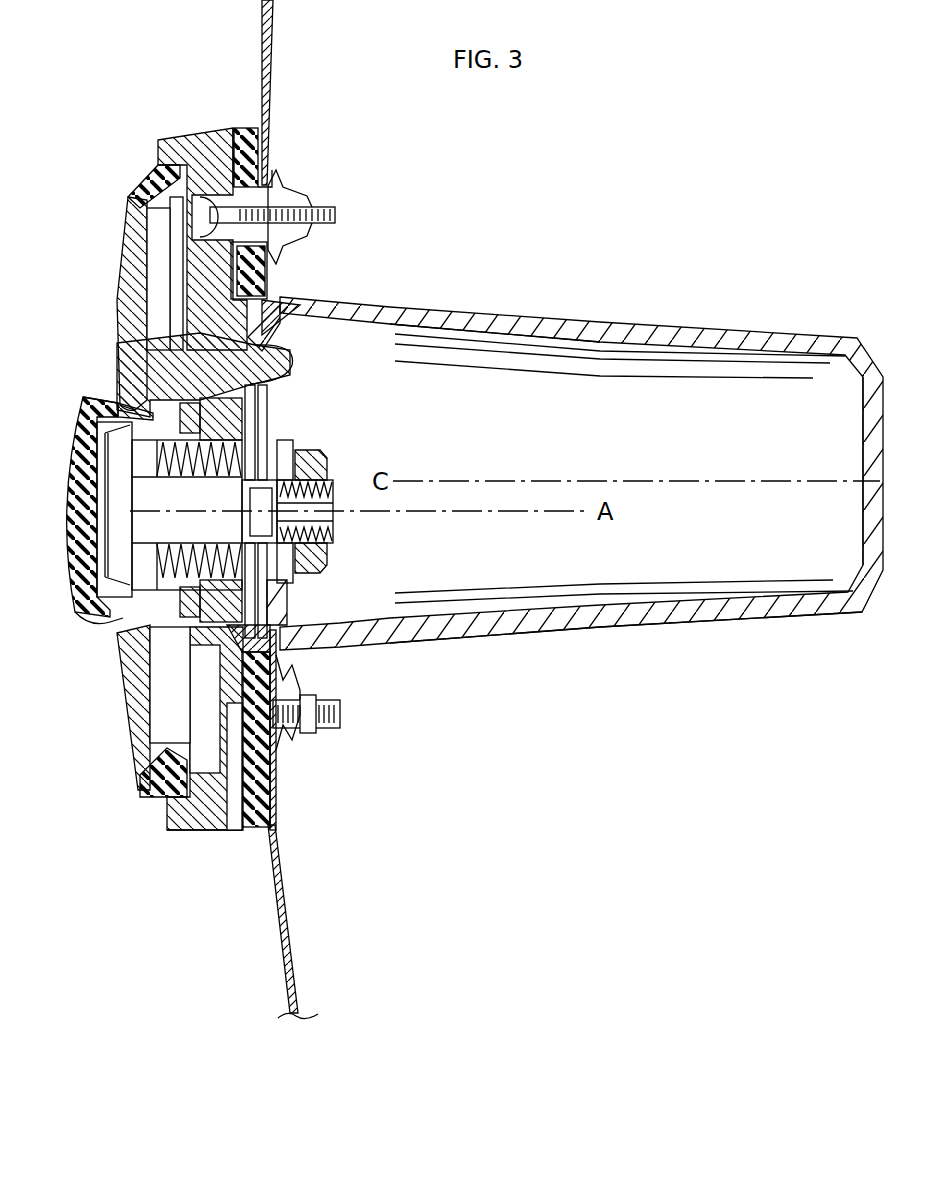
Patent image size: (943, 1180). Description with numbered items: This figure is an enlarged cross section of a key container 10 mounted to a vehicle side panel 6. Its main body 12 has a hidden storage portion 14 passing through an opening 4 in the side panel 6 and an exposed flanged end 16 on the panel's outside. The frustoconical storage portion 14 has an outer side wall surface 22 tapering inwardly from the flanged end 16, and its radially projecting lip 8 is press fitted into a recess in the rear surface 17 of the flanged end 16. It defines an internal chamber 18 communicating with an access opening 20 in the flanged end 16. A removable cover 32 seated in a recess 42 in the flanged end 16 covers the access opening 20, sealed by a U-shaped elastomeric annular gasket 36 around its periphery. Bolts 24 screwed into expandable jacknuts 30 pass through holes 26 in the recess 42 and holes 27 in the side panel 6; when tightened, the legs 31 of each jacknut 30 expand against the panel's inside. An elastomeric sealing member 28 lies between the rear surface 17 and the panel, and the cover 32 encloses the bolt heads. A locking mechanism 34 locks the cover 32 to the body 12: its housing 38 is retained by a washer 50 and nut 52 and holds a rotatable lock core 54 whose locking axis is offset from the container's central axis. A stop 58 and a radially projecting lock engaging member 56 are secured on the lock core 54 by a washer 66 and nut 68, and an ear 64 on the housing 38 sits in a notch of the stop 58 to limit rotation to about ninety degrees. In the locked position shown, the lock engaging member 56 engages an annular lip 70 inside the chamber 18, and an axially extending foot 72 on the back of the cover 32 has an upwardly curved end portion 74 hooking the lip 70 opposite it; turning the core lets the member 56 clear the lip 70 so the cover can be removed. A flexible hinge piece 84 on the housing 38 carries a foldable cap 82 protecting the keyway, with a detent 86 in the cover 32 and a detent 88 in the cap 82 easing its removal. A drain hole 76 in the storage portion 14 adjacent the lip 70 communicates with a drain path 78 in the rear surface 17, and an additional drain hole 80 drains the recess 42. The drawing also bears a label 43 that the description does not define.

The opening 4 is at (276, 322).
The side panel 6 is at (280, 961).
The radially projecting lip 8 is at (258, 272).
The key container 10 is at (620, 310).
The main body 12 is at (440, 648).
The storage portion 14 is at (611, 630).
The flanged end 16 is at (170, 817).
The rear surface 17 is at (216, 142).
The internal chamber 18 is at (691, 584).
The access opening 20 is at (270, 394).
The outer side wall surface 22 is at (516, 650).
The bolts 24 is at (332, 207).
The holes 26 is at (268, 147).
The holes 27 is at (272, 176).
The elastomeric sealing member 28 is at (243, 128).
The expandable jacknuts 30 is at (322, 191).
The legs 31 is at (294, 180).
The removable cover 32 is at (112, 686).
The locking mechanism 34 is at (110, 517).
The elastomeric annular gasket 36 is at (137, 172).
The housing 38 is at (150, 500).
The recess 42 is at (195, 238).
The lens holder 43 is at (192, 175).
The washer 50 is at (150, 386).
The nut 52 is at (150, 368).
The lock core 54 is at (333, 484).
The lock engaging member 56 is at (300, 589).
The stop 58 is at (262, 450).
The ear 64 is at (268, 407).
The washer 66 is at (313, 447).
The nut 68 is at (330, 453).
The annular lip 70 is at (287, 312).
The axially extending foot 72 is at (306, 364).
The upwardly curved end portion 74 is at (336, 330).
The drain hole 76 is at (295, 620).
The drain path 78 is at (233, 832).
The additional drain hole 80 is at (273, 777).
The foldable cap 82 is at (60, 458).
The flexible hinge piece 84 is at (108, 628).
The detent 86 is at (120, 353).
The detent 88 is at (105, 396).